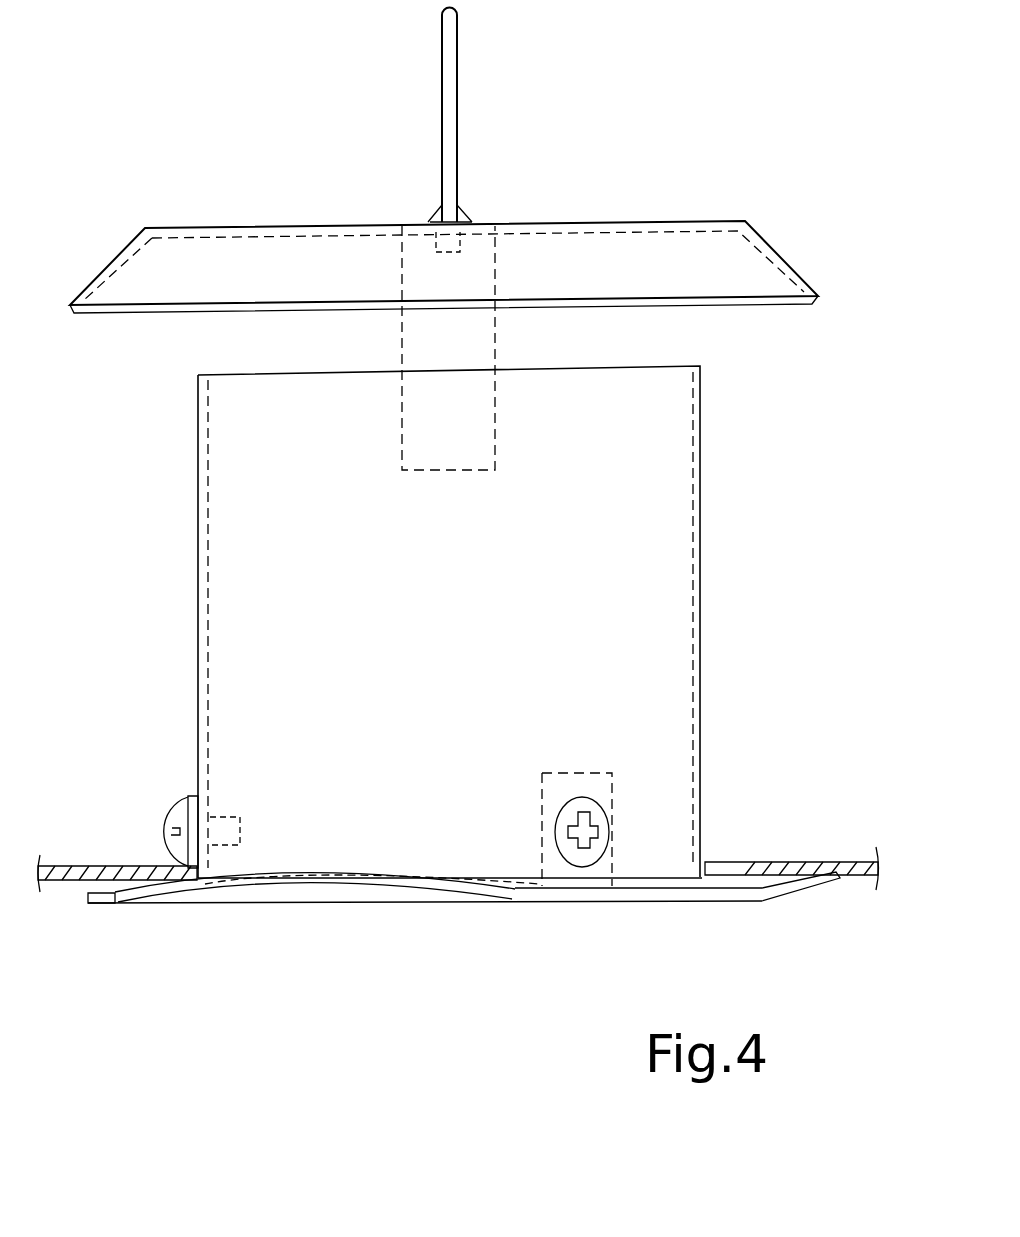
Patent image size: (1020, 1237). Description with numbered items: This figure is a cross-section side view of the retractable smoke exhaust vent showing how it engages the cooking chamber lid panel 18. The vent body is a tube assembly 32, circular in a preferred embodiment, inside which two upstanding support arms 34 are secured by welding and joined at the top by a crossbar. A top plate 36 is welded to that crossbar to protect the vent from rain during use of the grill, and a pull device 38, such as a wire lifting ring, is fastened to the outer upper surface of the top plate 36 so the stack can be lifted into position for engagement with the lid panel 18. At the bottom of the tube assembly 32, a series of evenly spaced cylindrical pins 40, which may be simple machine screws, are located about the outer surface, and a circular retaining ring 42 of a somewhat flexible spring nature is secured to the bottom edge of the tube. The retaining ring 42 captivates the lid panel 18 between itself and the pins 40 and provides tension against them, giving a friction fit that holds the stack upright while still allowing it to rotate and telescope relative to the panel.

The lid panel 18 is at (815, 860).
The tube assembly 32 is at (665, 533).
The upstanding support arms 34 is at (477, 336).
The top plate 36 is at (648, 220).
The pull device 38 is at (453, 38).
The cylindrical pins 40 is at (180, 812).
The retaining ring 42 is at (288, 895).